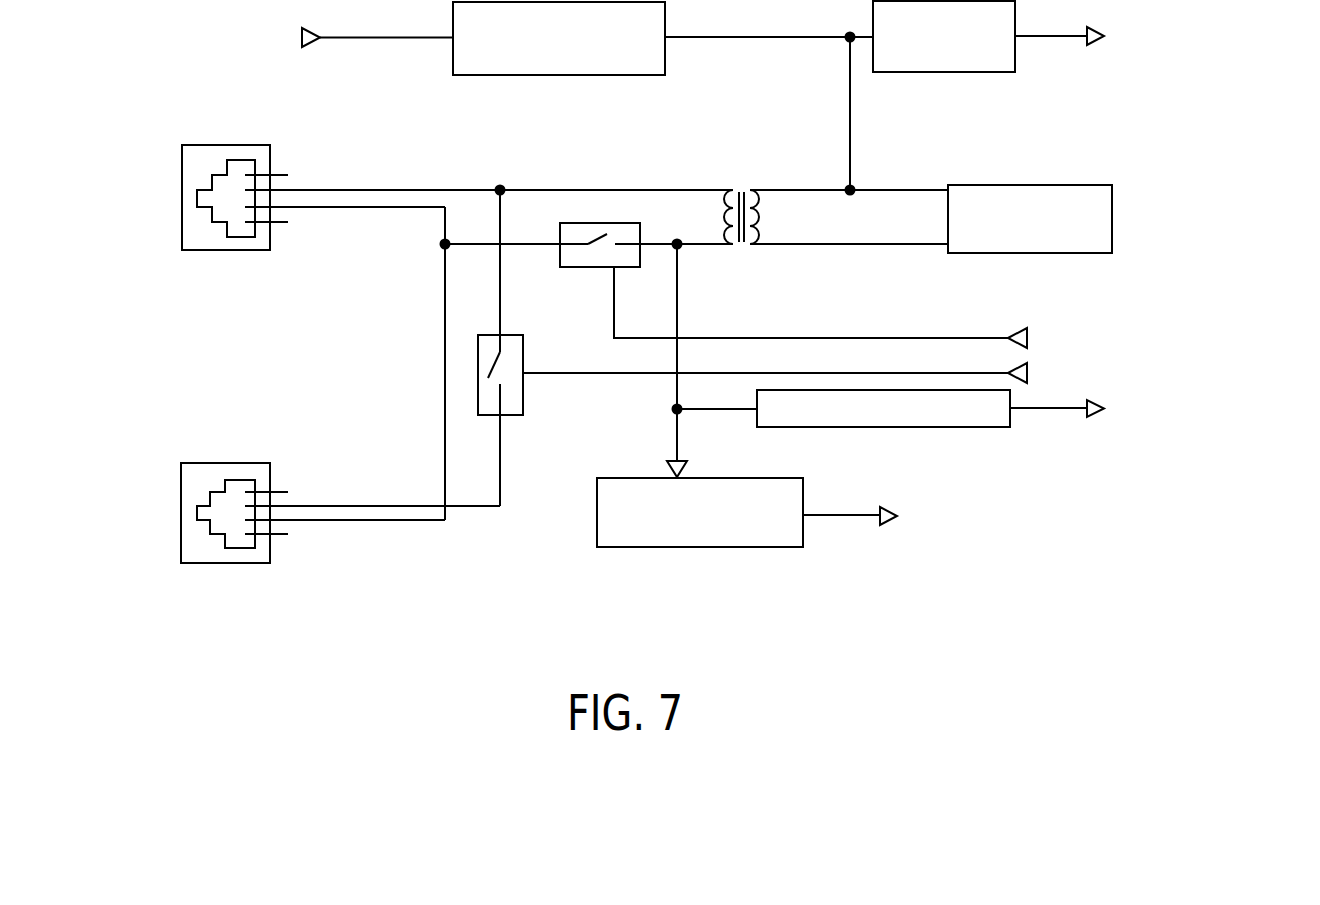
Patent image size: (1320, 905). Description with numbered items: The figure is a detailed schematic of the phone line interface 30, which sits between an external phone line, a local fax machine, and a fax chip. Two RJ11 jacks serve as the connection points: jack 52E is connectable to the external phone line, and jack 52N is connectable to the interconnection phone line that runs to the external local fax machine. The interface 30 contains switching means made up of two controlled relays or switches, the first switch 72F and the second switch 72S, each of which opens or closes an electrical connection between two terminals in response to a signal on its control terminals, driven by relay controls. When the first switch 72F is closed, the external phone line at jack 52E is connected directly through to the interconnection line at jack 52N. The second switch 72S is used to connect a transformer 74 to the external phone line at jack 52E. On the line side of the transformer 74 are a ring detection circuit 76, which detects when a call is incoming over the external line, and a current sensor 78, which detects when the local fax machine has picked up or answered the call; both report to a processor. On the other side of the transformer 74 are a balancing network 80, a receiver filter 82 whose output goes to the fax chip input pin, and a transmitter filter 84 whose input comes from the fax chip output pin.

The line interface 30 is at (1028, 617).
The jack 52E is at (270, 146).
The jack 52N is at (270, 464).
The second switch or relay 72S is at (560, 267).
The first switch or relay 72F is at (523, 363).
The transformer 74 is at (755, 195).
The ring detection circuit 76 is at (702, 547).
The current sensor 78 is at (925, 427).
The balancing network 80 is at (1028, 183).
The receiver filter 82 is at (937, 72).
The transmitter filter 84 is at (552, 75).